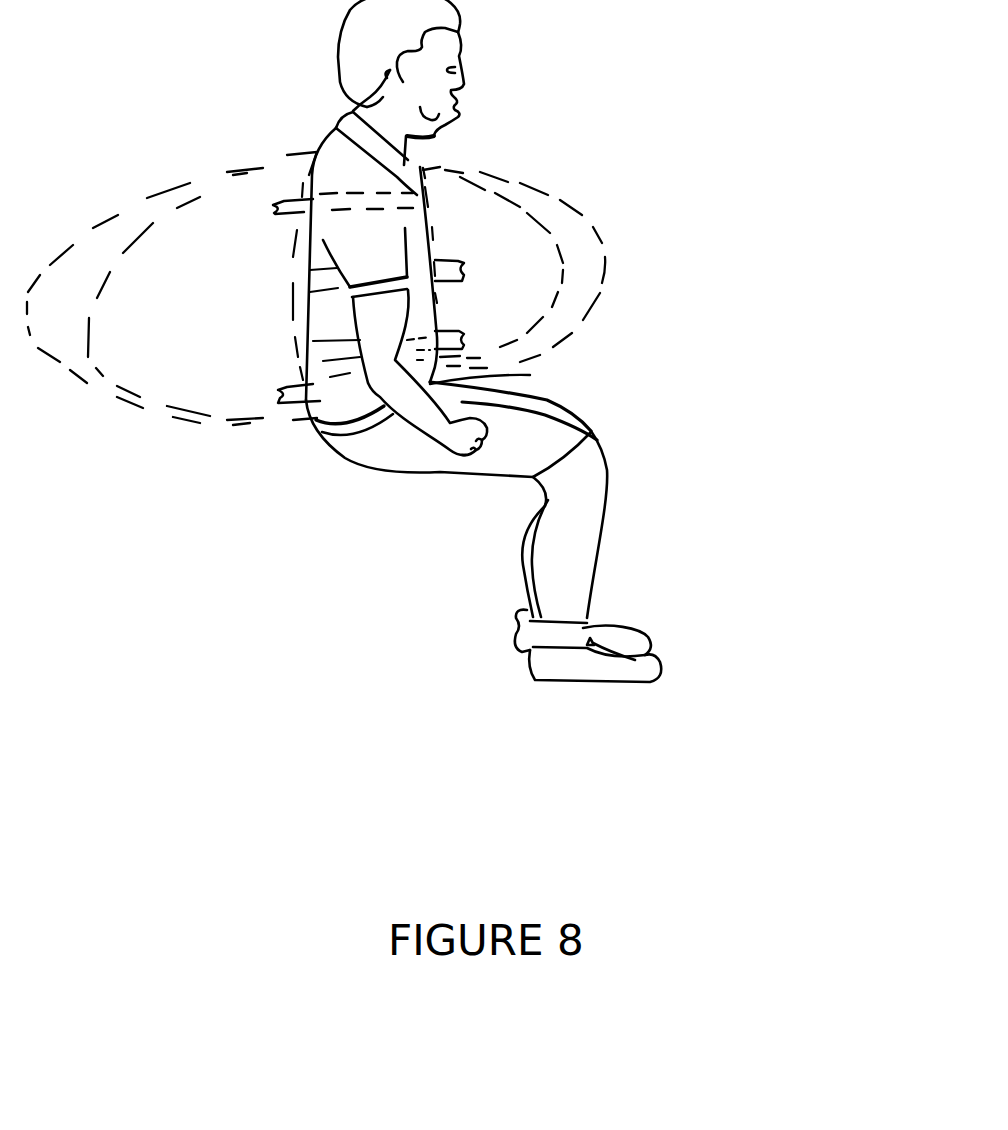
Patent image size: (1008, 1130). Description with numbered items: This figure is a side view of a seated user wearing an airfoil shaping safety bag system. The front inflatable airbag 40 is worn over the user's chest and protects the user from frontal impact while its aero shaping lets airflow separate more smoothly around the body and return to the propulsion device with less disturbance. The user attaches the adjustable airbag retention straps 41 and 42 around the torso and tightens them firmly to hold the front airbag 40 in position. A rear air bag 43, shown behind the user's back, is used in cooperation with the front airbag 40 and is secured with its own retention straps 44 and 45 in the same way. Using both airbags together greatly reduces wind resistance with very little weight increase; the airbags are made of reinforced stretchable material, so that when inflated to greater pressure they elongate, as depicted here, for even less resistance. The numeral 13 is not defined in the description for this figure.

The user 13 is at (593, 480).
The front inflatable airbag 40 is at (548, 262).
The adjustable airbag retention strap 41 is at (431, 242).
The adjustable airbag retention strap 42 is at (530, 375).
The rear air bag 43 is at (233, 255).
The retention strap 44 is at (352, 203).
The retention strap 45 is at (342, 386).